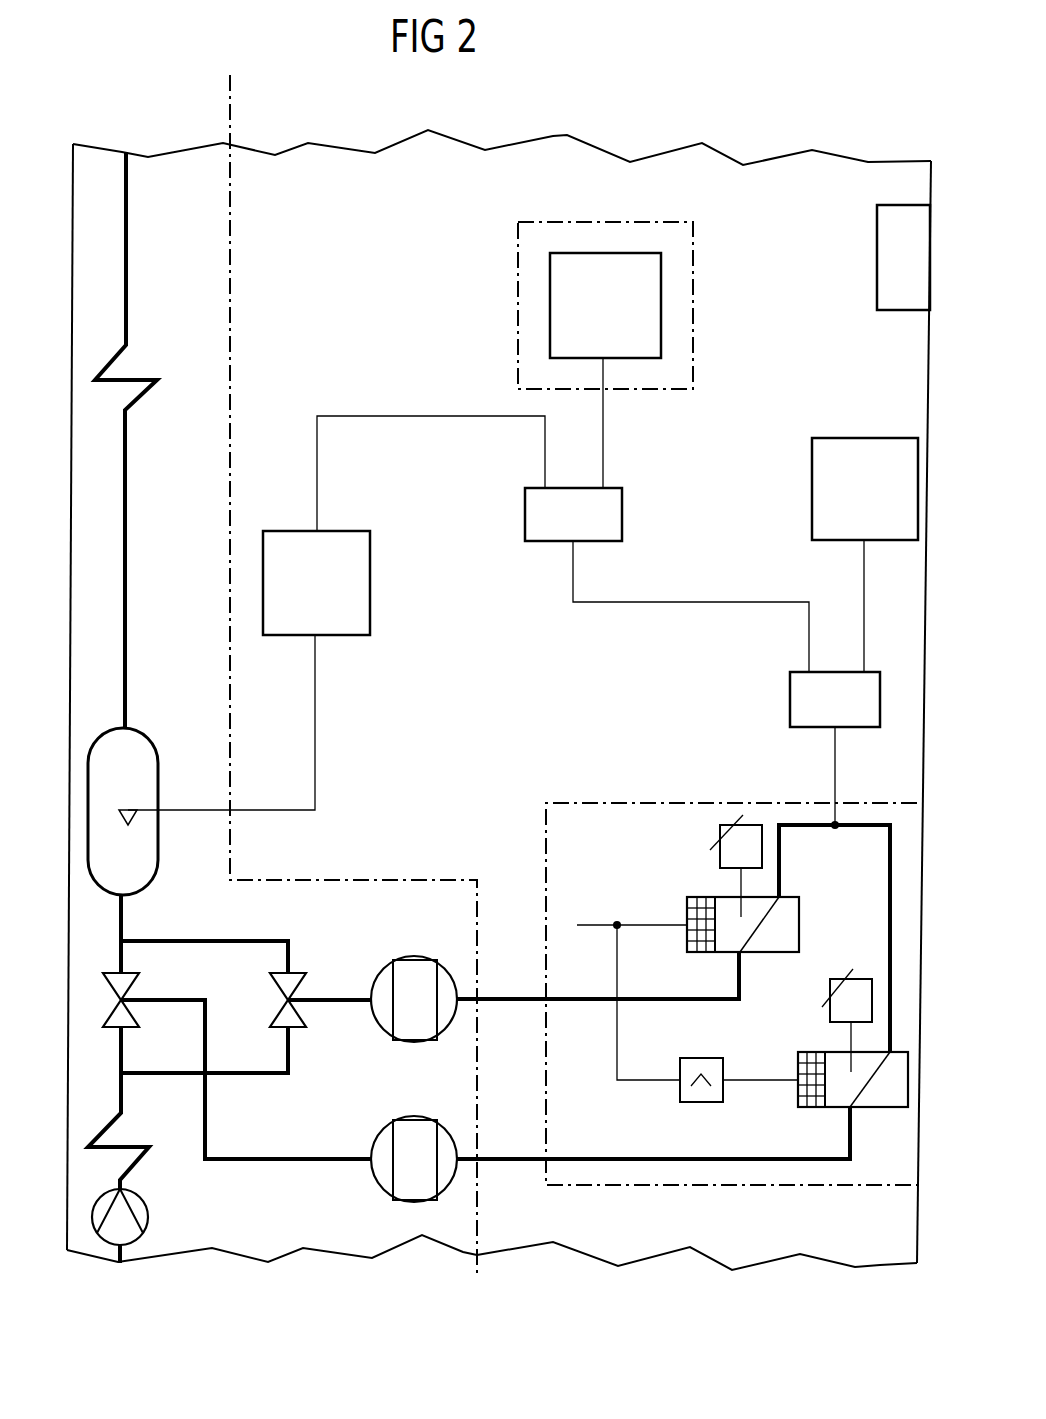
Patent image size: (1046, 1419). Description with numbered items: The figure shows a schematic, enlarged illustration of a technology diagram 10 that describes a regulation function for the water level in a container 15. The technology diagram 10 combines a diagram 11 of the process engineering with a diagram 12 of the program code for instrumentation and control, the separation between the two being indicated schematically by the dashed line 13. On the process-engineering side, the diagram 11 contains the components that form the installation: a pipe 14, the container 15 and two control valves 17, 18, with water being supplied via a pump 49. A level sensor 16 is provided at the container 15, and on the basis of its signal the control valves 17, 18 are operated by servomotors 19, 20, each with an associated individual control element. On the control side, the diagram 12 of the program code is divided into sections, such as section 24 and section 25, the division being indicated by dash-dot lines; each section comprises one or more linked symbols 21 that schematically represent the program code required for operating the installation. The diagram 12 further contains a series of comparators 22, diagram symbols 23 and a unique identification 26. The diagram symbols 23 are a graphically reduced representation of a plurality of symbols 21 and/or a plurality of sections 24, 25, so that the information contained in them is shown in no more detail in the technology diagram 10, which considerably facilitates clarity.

The technology diagram 10 is at (628, 108).
The diagram of the process engineering 11 is at (141, 135).
The diagram of the program code 12 is at (729, 140).
The dashed line 13 is at (232, 87).
The pipe 14 is at (128, 252).
The container 15 is at (145, 730).
The level sensor 16 is at (130, 812).
The control valve 17 is at (298, 972).
The control valve 18 is at (130, 990).
The servomotor 19 is at (414, 956).
The servomotor 20 is at (414, 1116).
The symbol 21 is at (757, 825).
The comparator 22 is at (622, 505).
The diagram symbol 23 is at (661, 303).
The section 24 is at (617, 800).
The section 25 is at (590, 220).
The unique identification 26 is at (877, 258).
The pump 49 is at (148, 1222).